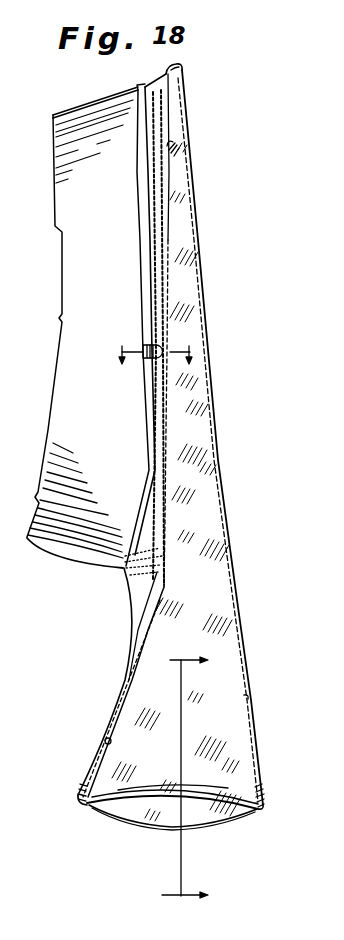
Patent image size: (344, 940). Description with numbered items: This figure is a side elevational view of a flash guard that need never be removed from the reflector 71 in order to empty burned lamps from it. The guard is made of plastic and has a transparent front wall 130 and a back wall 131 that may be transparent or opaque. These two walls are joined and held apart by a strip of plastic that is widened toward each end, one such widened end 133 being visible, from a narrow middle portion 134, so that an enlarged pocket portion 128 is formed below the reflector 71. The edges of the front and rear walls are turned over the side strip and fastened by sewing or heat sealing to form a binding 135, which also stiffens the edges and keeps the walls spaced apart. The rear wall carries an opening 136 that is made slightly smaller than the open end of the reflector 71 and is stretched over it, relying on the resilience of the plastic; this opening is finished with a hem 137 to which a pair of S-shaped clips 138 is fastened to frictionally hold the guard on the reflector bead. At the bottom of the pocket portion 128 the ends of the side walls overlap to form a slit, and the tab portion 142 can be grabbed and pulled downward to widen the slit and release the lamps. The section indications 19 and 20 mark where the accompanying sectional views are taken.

The front wall 130 is at (213, 383).
The hem 137 is at (147, 270).
The narrow middle portion 134 is at (172, 143).
The reflector 71 is at (108, 423).
The opening 136 is at (122, 572).
The back wall 131 is at (117, 698).
The S-shaped clips 138 is at (145, 358).
The section line 20- 20 is at (151, 341).
The section line 19- 19 is at (172, 779).
The binding 135 is at (245, 696).
The widened end of side strip 133 is at (238, 754).
The pocket portion 128 is at (86, 805).
The tab portion 142 is at (172, 826).